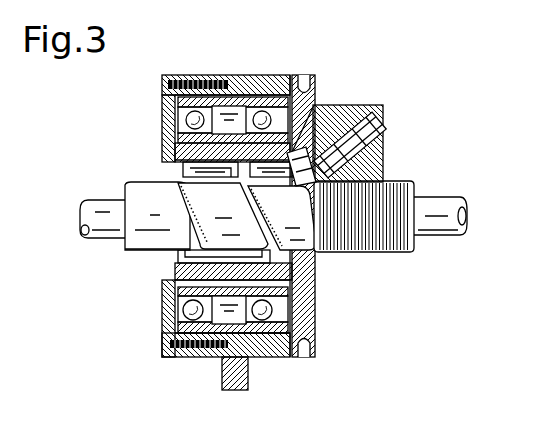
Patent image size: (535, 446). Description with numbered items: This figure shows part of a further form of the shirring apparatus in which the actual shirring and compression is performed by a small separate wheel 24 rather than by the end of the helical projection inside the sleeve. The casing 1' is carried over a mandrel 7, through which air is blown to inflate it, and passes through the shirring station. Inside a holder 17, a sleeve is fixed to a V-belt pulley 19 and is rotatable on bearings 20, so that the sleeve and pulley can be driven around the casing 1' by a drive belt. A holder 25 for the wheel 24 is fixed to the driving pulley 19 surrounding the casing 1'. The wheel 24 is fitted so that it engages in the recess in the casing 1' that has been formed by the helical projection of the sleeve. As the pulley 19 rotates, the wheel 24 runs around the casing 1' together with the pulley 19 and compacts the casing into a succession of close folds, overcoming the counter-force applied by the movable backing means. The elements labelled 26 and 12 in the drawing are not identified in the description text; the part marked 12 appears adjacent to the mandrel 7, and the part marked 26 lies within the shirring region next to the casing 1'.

The holder 17 is at (238, 86).
The V-belt pulley 19 is at (310, 303).
The bearings 20 is at (183, 311).
The casing 1' is at (135, 237).
The helical gear 26 is at (258, 210).
The gear wheel 12 is at (406, 252).
The mandrel 7 is at (445, 210).
The wheel 24 is at (326, 118).
The holder for the wheel 25 is at (352, 113).